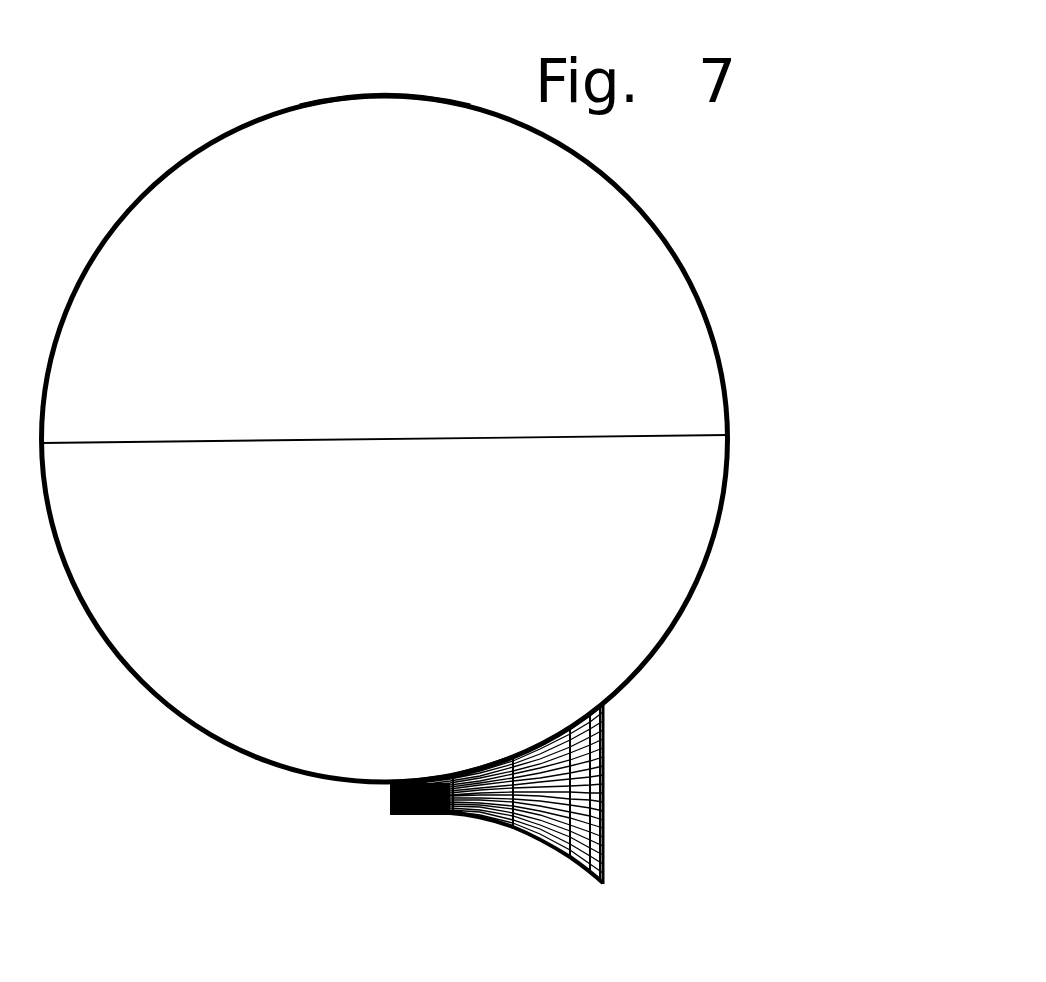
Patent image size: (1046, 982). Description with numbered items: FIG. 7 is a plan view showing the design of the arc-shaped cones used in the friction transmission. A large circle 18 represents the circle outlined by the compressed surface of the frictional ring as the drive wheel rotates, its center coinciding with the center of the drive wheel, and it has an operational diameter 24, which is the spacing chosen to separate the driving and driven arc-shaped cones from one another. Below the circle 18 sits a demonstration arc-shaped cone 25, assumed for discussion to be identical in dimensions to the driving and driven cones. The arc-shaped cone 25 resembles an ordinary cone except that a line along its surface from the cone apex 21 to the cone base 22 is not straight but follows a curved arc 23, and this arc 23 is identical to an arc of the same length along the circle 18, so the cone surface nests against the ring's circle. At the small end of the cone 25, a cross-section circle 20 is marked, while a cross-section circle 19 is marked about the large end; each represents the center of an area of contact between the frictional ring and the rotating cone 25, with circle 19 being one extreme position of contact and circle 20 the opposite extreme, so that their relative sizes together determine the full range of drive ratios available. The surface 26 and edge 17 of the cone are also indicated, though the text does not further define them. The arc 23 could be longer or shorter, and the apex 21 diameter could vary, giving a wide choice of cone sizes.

The upper output edge of horn 17 is at (603, 773).
The circle 18 is at (713, 548).
The circle about the large end of the arc-shaped cone 19 is at (603, 852).
The circle about the small end of the arc-shaped cone 20 is at (402, 780).
The cone apex 21 is at (390, 783).
The cone base 22 is at (598, 712).
The arc 23 is at (480, 768).
The diameter 24 is at (450, 437).
The arc-shaped cone 25 is at (500, 830).
The spherical surface 26 is at (374, 93).